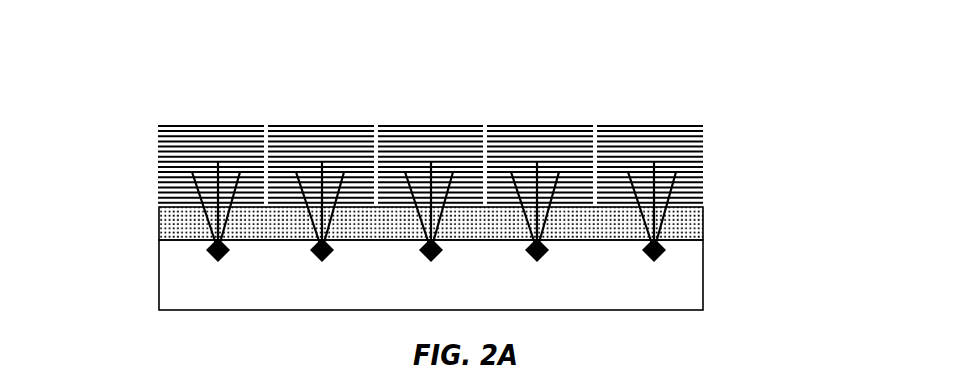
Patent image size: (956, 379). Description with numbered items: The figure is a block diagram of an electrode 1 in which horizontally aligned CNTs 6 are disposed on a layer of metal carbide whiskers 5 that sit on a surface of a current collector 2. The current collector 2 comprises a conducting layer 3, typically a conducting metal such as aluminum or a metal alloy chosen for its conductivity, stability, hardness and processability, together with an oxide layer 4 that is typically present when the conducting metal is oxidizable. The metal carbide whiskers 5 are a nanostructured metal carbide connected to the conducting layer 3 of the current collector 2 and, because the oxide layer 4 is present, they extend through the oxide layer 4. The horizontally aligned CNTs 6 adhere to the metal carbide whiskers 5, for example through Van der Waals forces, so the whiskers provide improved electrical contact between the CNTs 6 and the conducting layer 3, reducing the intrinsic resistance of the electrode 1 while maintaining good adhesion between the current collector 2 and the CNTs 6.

The electrode 1 is at (648, 68).
The current collector 2 is at (151, 308).
The conducting layer 3 is at (711, 243).
The oxide layer 4 is at (711, 207).
The metal carbide whiskers 5 is at (677, 192).
The horizontally aligned CNTs 6 is at (176, 154).